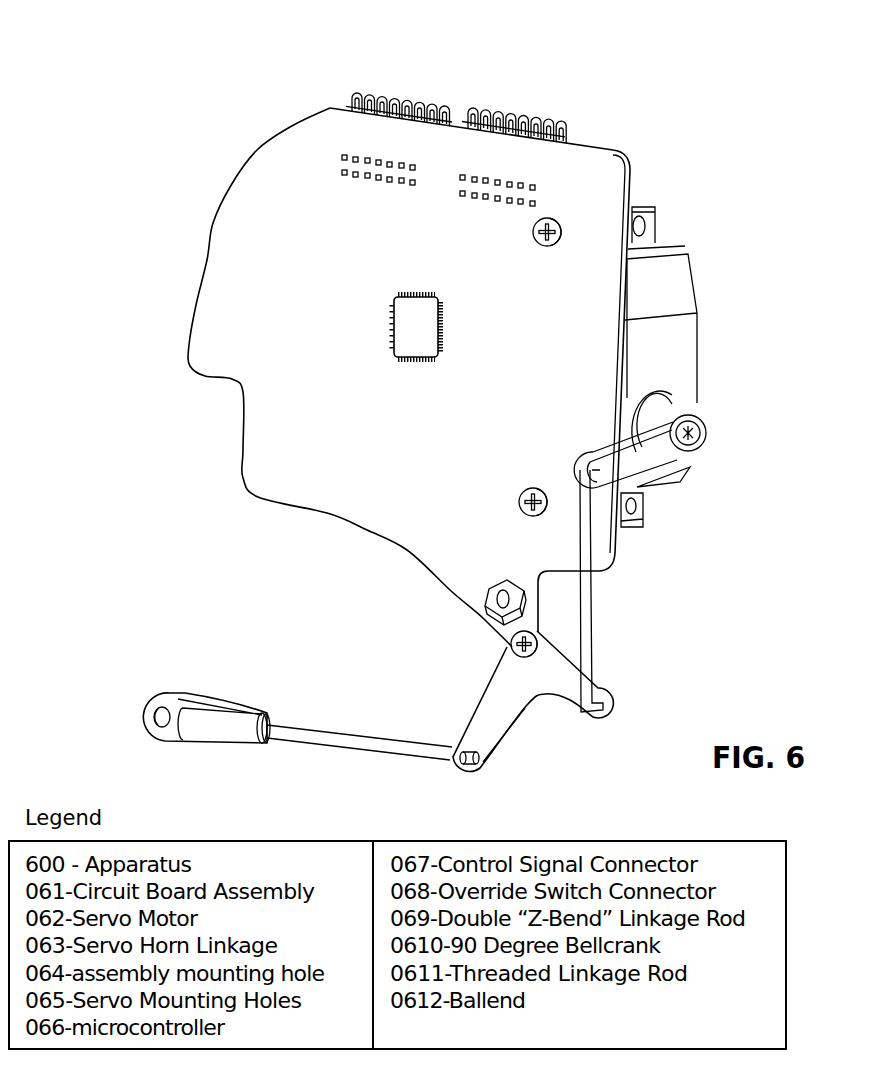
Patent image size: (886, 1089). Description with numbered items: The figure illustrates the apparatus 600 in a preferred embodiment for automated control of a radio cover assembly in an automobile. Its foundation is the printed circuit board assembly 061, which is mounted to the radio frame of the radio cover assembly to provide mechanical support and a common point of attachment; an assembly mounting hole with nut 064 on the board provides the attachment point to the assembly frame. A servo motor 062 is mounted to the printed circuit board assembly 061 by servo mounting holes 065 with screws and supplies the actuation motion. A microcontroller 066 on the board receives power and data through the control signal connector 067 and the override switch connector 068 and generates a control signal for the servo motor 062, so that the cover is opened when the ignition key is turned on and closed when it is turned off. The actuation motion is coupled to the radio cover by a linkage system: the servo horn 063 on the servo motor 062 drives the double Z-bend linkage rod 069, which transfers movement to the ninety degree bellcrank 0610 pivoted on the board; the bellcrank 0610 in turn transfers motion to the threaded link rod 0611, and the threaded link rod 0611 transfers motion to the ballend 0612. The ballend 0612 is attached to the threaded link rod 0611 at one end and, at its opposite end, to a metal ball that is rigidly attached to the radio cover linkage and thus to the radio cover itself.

The apparatus 600 is at (773, 716).
The printed circuit board assembly 061 is at (602, 165).
The servo motor 062 is at (692, 333).
The servo horn 063 is at (642, 460).
The assembly mounting hole with nut 064 is at (495, 605).
The servo mounting holes 065 is at (532, 236).
The microcontroller 066 is at (403, 324).
The control signal connector 067 is at (379, 95).
The override switch connector 068 is at (510, 116).
The double Z-bend linkage rod 069 is at (590, 608).
The 90 degree bellcrank 0610 is at (530, 700).
The threaded link rod 0611 is at (334, 747).
The ballend 0612 is at (149, 712).